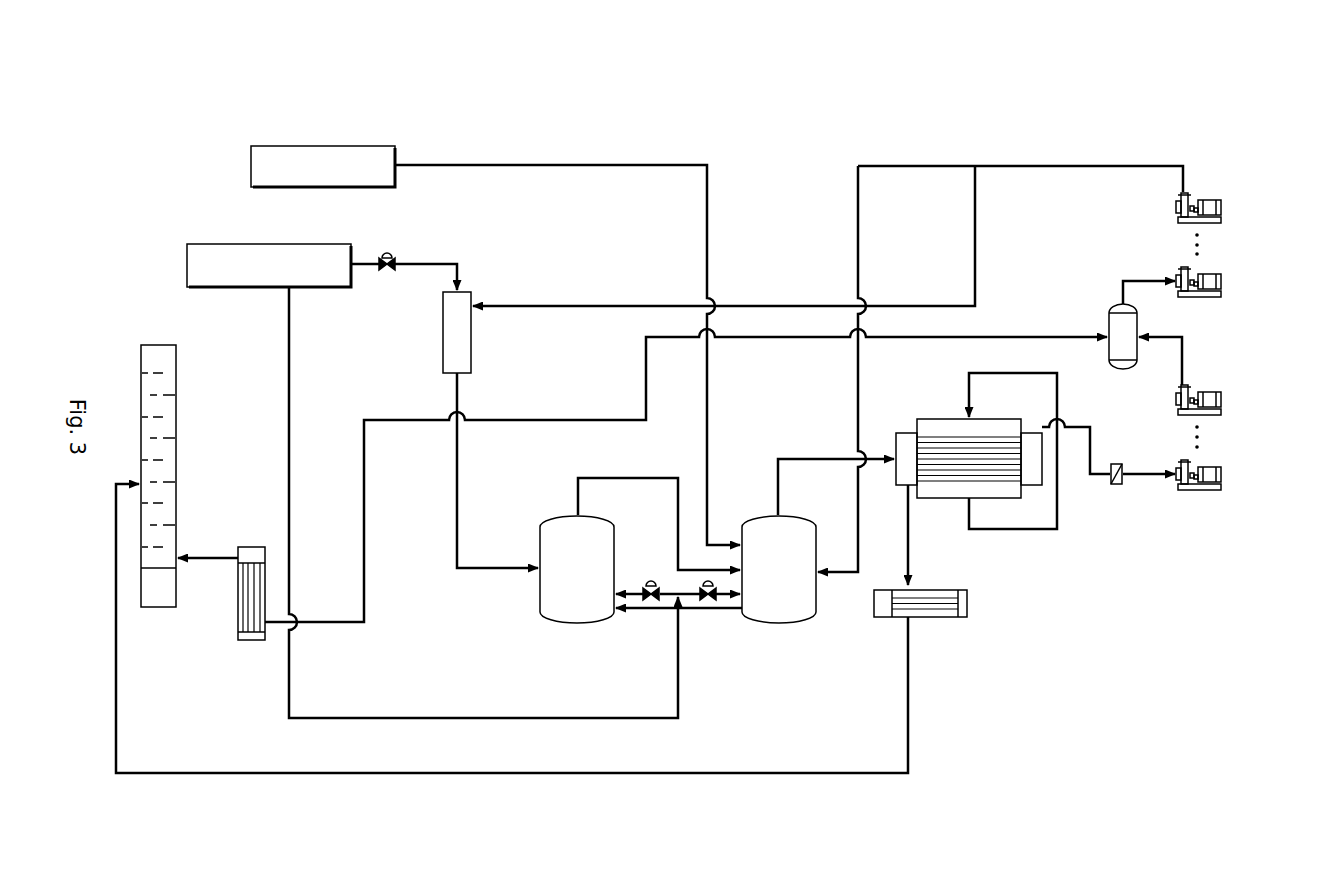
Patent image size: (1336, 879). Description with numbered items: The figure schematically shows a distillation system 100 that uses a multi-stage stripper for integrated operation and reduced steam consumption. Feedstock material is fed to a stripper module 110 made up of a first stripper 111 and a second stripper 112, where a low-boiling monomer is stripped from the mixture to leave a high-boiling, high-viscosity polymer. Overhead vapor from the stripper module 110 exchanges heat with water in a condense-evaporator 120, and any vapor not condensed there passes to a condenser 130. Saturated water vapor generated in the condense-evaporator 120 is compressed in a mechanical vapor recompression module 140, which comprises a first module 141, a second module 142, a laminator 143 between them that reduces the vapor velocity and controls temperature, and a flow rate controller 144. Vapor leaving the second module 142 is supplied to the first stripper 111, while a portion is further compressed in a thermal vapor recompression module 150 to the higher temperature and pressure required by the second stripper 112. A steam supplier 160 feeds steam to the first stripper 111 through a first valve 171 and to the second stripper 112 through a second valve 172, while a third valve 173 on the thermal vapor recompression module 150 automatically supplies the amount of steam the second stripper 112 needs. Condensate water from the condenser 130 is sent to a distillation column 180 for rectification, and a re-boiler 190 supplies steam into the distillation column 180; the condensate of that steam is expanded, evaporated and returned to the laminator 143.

The distillation system 100 is at (157, 93).
The stripper module 110 is at (594, 692).
The first stripper 111 is at (766, 624).
The second stripper 112 is at (593, 624).
The condense-evaporator 120 is at (906, 433).
The condenser 130 is at (967, 603).
The mechanical vapor recompression module 140 is at (1288, 209).
The first module 141 is at (1222, 400).
The second module 142 is at (1222, 207).
The laminator 143 is at (1138, 320).
The flow rate controller 144 is at (1115, 464).
The thermal vapor recompression module 150 is at (471, 335).
The steam supplier 160 is at (201, 244).
The first valve 171 is at (708, 605).
The second valve 172 is at (651, 605).
The third valve 173 is at (390, 252).
The distillation column 180 is at (176, 416).
The re-boiler 190 is at (251, 547).